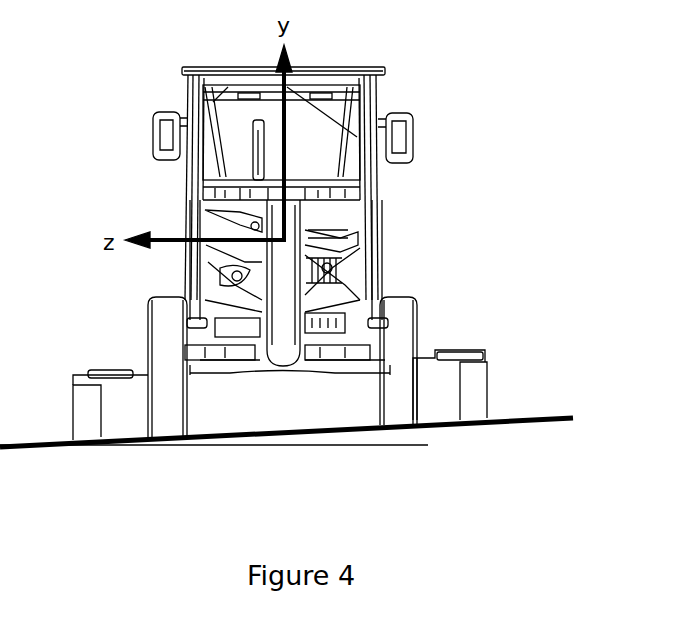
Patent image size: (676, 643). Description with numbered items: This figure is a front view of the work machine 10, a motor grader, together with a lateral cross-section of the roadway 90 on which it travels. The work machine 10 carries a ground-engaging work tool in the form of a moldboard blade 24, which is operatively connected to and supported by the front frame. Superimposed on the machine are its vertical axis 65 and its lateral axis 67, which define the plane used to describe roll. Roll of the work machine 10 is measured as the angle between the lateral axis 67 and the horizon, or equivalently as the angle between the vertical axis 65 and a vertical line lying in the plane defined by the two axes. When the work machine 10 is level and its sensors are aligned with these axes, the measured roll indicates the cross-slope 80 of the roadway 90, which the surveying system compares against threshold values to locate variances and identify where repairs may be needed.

The work machine 10 is at (456, 185).
The moldboard blade 24 is at (474, 392).
The vertical axis 65 is at (325, 88).
The lateral axis 67 is at (158, 236).
The cross-slope 80 is at (405, 446).
The roadway 90 is at (452, 431).